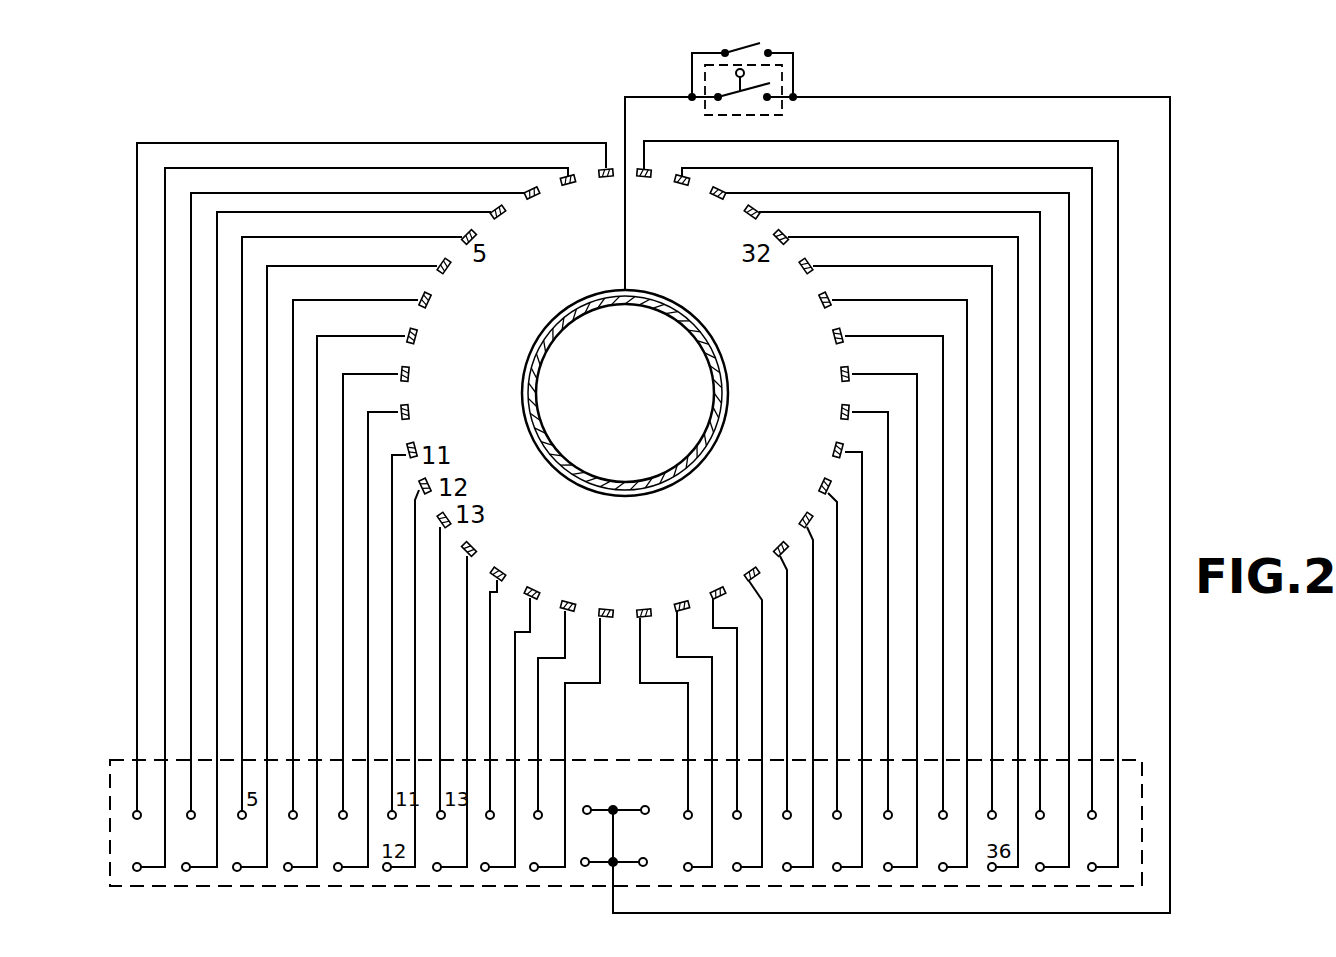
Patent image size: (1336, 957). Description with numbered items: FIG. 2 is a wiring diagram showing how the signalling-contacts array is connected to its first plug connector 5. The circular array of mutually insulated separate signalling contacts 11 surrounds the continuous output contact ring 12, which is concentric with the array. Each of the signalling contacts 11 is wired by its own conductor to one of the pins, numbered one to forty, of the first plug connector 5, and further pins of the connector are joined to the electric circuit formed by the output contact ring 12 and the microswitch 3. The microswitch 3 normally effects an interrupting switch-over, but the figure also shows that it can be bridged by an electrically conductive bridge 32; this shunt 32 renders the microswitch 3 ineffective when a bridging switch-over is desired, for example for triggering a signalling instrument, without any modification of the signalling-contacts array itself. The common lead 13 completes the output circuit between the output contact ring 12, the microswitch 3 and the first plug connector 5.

The microswitch 3 is at (766, 71).
The electrically conductive bridge 32 is at (748, 50).
The first plug connector 5 is at (110, 862).
The signalling contacts 11 is at (533, 188).
The output contact ring 12 is at (598, 297).
The common lead 13 is at (960, 96).